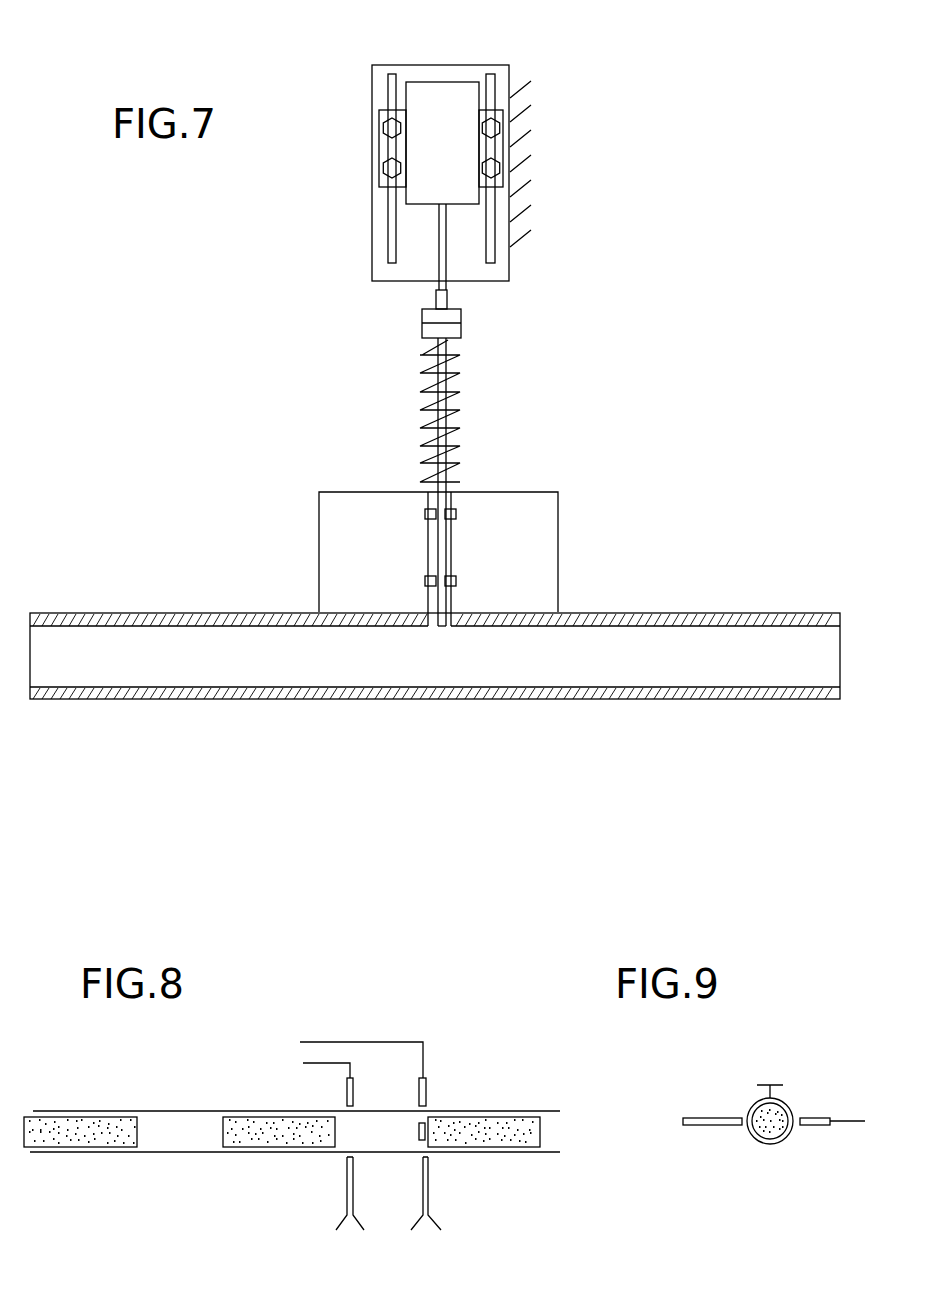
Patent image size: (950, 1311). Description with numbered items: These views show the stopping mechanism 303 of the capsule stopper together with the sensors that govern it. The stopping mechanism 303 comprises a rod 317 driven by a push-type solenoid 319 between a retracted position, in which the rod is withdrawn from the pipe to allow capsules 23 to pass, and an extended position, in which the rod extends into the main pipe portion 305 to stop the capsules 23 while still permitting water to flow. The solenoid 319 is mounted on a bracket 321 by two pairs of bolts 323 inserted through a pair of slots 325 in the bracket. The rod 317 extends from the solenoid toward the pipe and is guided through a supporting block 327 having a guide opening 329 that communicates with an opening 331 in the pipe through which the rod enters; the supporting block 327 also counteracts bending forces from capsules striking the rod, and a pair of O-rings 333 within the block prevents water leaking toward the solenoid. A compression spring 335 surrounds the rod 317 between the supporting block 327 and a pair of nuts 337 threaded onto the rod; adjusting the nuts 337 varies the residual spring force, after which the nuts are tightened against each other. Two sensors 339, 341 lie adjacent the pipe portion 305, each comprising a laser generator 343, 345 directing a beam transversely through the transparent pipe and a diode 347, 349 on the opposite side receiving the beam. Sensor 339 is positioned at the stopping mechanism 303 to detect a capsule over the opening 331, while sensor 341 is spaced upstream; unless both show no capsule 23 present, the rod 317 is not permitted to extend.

In FIG. 8, the capsules 23 is at (137, 1111).
In FIG. 9, the capsules 23 is at (790, 1108).
In FIG. 7, the stopping mechanism 303 is at (602, 146).
In FIG. 8, the stopping mechanism 303 is at (417, 1134).
In FIG. 9, the stopping mechanism 303 is at (790, 1065).
In FIG. 7, the main pipe portion 305 is at (222, 612).
In FIG. 8, the main pipe portion 305 is at (295, 1163).
In FIG. 9, the main pipe portion 305 is at (770, 1145).
In FIG. 7, the rod 317 is at (455, 420).
In FIG. 7, the push-type solenoid 319 is at (440, 82).
In FIG. 7, the bracket 321 is at (510, 210).
In FIG. 7, the bolts 323 is at (383, 178).
In FIG. 7, the slots 325 is at (388, 245).
In FIG. 7, the supporting block 327 is at (395, 492).
In FIG. 7, the guide opening 329 is at (428, 560).
In FIG. 7, the opening 331 is at (444, 626).
In FIG. 7, the O-rings 333 is at (456, 580).
In FIG. 7, the compression spring 335 is at (455, 375).
In FIG. 7, the nuts 337 is at (422, 330).
In FIG. 8, the sensor 339 is at (425, 1230).
In FIG. 9, the sensor 339 is at (694, 1155).
In FIG. 8, the sensor 341 is at (349, 1230).
In FIG. 8, the laser generator 343 is at (430, 1175).
In FIG. 9, the laser generator 343 is at (730, 1118).
In FIG. 8, the laser generator 345 is at (347, 1187).
In FIG. 8, the diode 347 is at (427, 1093).
In FIG. 9, the diode 347 is at (815, 1127).
In FIG. 8, the diode 349 is at (347, 1093).